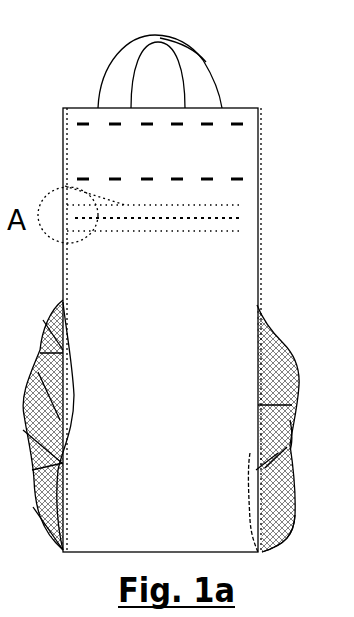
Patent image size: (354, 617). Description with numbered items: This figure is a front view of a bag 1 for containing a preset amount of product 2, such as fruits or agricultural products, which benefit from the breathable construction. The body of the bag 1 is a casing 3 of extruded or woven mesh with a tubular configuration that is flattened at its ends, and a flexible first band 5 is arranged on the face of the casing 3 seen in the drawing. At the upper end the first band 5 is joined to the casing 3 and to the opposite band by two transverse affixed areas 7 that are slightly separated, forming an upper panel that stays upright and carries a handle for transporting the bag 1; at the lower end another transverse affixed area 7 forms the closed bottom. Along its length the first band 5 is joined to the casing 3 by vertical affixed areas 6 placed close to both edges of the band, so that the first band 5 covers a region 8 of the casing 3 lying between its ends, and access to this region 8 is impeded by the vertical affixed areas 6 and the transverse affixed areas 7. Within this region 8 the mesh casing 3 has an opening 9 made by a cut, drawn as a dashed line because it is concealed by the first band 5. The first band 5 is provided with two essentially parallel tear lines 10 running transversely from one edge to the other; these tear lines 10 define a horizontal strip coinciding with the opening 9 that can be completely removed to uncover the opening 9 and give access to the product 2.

The bag 1 is at (78, 80).
The product 2 is at (285, 527).
The casing 3 is at (293, 436).
The first band 5 is at (213, 187).
The affixed areas 6 is at (62, 314).
The affixed areas 7 is at (240, 122).
The region 8 is at (62, 186).
The opening 9 is at (240, 218).
The tear lines 10 is at (244, 205).